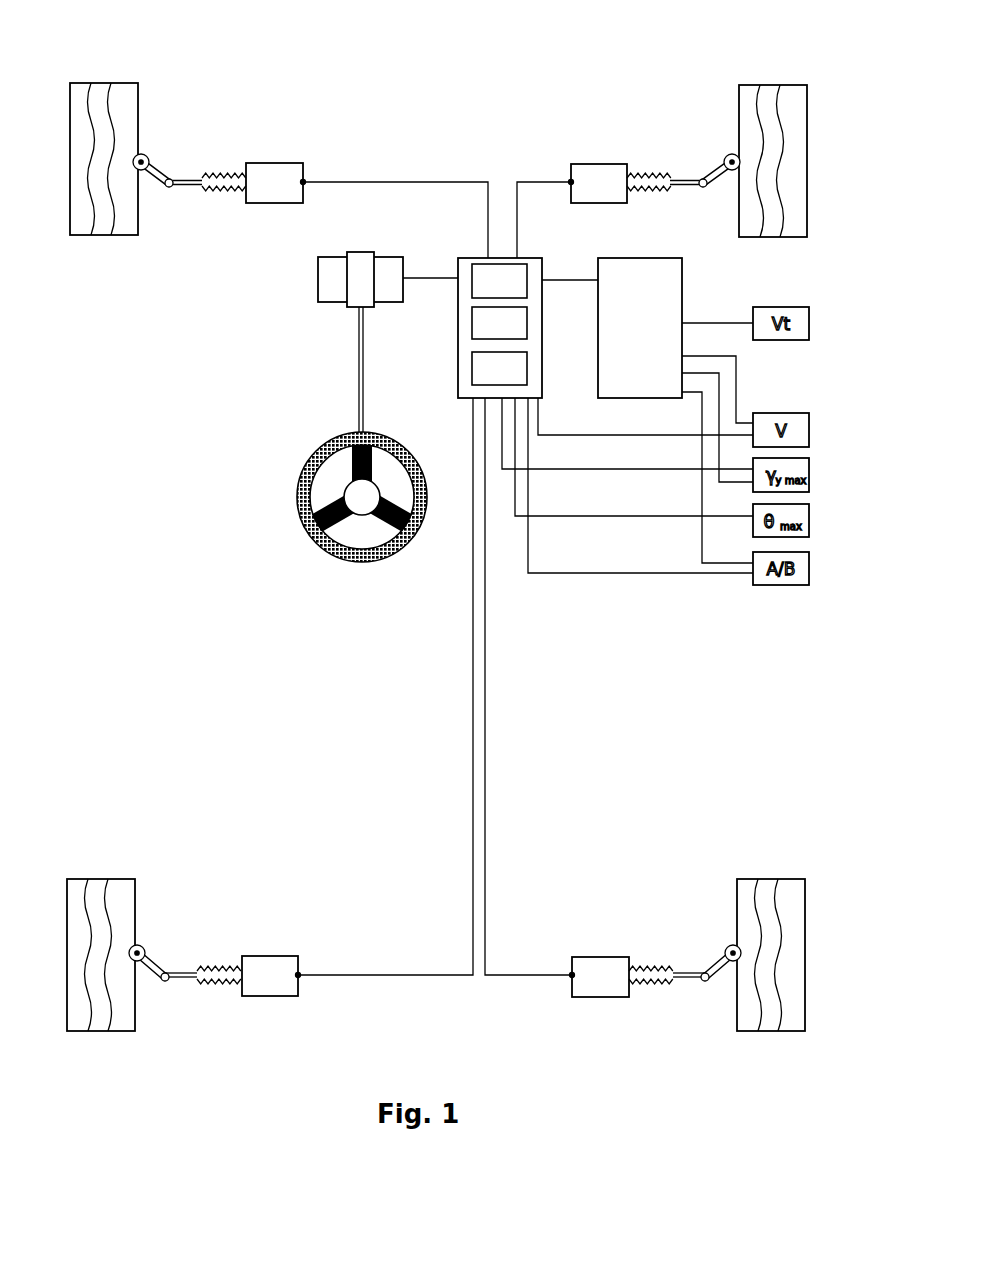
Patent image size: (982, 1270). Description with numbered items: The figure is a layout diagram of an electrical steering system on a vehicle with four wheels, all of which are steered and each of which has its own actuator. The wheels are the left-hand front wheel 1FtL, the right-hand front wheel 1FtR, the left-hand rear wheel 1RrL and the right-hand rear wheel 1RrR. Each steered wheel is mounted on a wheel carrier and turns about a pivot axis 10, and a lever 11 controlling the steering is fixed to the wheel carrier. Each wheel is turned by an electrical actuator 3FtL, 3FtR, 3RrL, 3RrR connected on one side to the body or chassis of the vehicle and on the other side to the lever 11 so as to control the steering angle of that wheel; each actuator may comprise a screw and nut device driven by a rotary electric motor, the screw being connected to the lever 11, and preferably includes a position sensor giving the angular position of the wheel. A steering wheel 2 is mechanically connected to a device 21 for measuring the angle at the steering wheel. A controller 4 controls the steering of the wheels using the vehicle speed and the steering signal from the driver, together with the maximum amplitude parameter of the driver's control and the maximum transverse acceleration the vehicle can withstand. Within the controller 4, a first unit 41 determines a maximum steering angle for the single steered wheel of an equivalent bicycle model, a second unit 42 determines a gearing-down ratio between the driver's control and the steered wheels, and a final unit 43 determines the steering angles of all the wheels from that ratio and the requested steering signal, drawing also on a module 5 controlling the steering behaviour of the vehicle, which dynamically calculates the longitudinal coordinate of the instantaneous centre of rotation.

The left-hand front wheel 1FtL is at (116, 128).
The right-hand front wheel 1FtR is at (785, 129).
The left-hand rear wheel 1RrL is at (115, 924).
The right-hand rear wheel 1RrR is at (785, 923).
The electrical actuator 3FtL is at (297, 105).
The electrical actuator 3FtR is at (620, 105).
The electrical actuator 3RrL is at (269, 922).
The electrical actuator 3RrR is at (618, 918).
The pivot axis 10 is at (170, 125).
The lever 11 is at (136, 233).
The steering wheel 2 is at (319, 434).
The device for measuring the angle at the steering wheel 21 is at (326, 297).
The controller 4 is at (517, 302).
The first unit 41 is at (543, 370).
The second unit 42 is at (543, 310).
The final unit 43 is at (543, 267).
The module controlling the steering behaviour of the vehicle 5 is at (655, 306).